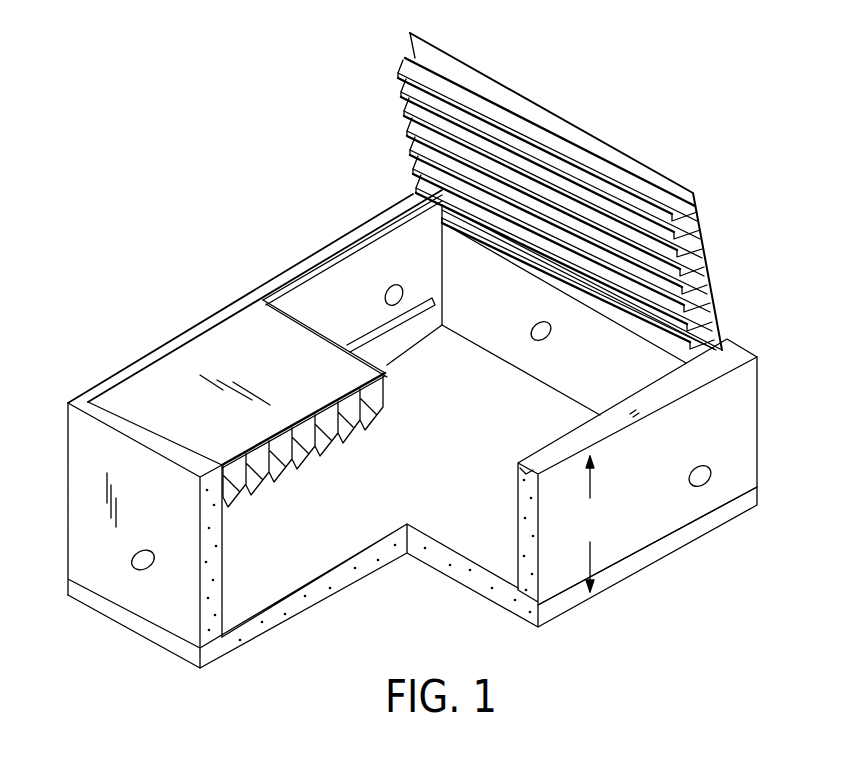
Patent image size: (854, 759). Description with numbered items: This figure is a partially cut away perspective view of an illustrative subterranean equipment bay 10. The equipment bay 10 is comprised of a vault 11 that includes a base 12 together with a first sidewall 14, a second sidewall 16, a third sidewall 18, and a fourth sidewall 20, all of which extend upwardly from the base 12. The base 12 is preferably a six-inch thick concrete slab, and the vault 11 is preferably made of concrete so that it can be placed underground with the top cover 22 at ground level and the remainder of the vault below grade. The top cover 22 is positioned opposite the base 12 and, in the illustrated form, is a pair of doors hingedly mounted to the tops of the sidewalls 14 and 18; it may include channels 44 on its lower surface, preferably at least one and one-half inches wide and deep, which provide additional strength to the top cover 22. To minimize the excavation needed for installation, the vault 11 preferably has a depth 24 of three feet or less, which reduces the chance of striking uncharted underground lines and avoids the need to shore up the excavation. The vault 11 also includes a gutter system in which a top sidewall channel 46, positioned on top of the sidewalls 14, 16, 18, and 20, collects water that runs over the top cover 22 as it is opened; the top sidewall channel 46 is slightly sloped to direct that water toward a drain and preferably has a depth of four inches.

The subterranean equipment bay 10 is at (306, 196).
The vault 11 is at (173, 339).
The base 12 is at (460, 518).
The first sidewall 14 is at (80, 552).
The second sidewall 16 is at (330, 307).
The third sidewall 18 is at (655, 358).
The fourth sidewall 20 is at (658, 505).
The top cover 22 is at (708, 258).
The depth 24 is at (589, 524).
The channels 44 is at (397, 88).
The top sidewall channel 46 is at (520, 489).